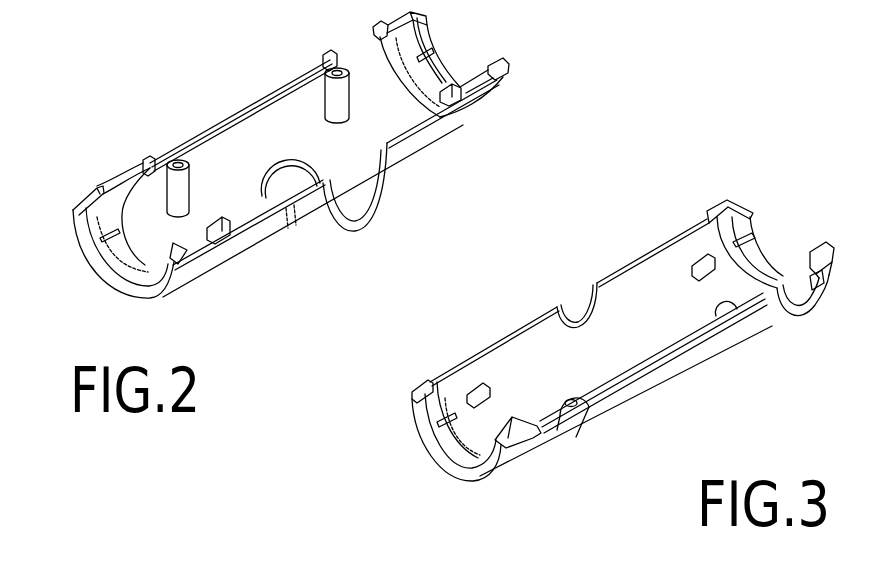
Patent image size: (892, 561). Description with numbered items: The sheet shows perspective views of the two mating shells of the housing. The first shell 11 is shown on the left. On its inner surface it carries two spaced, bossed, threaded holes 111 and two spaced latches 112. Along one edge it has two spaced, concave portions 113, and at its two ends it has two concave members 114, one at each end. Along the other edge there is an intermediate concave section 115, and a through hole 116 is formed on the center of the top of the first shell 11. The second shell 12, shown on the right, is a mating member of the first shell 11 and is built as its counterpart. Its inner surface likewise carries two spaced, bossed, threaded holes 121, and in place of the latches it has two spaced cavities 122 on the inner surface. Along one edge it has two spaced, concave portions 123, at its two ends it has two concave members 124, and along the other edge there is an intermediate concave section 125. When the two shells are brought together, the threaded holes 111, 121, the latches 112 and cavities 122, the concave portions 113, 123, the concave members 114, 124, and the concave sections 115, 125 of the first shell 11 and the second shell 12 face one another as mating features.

In FIG. 2, the first shell 11 is at (230, 105).
In FIG. 2, the bossed, threaded holes 111 is at (168, 160).
In FIG. 2, the latches 112 is at (229, 242).
In FIG. 2, the concave portions 113 is at (118, 178).
In FIG. 2, the concave members 114 is at (110, 263).
In FIG. 2, the intermediate concave section 115 is at (340, 178).
In FIG. 2, the through hole 116 is at (286, 222).
In FIG. 3, the second shell 12 is at (677, 387).
In FIG. 3, the bossed, threaded holes 121 is at (746, 336).
In FIG. 3, the cavities 122 is at (468, 385).
In FIG. 3, the concave portions 123 is at (573, 433).
In FIG. 3, the concave members 124 is at (445, 448).
In FIG. 3, the intermediate concave section 125 is at (580, 303).